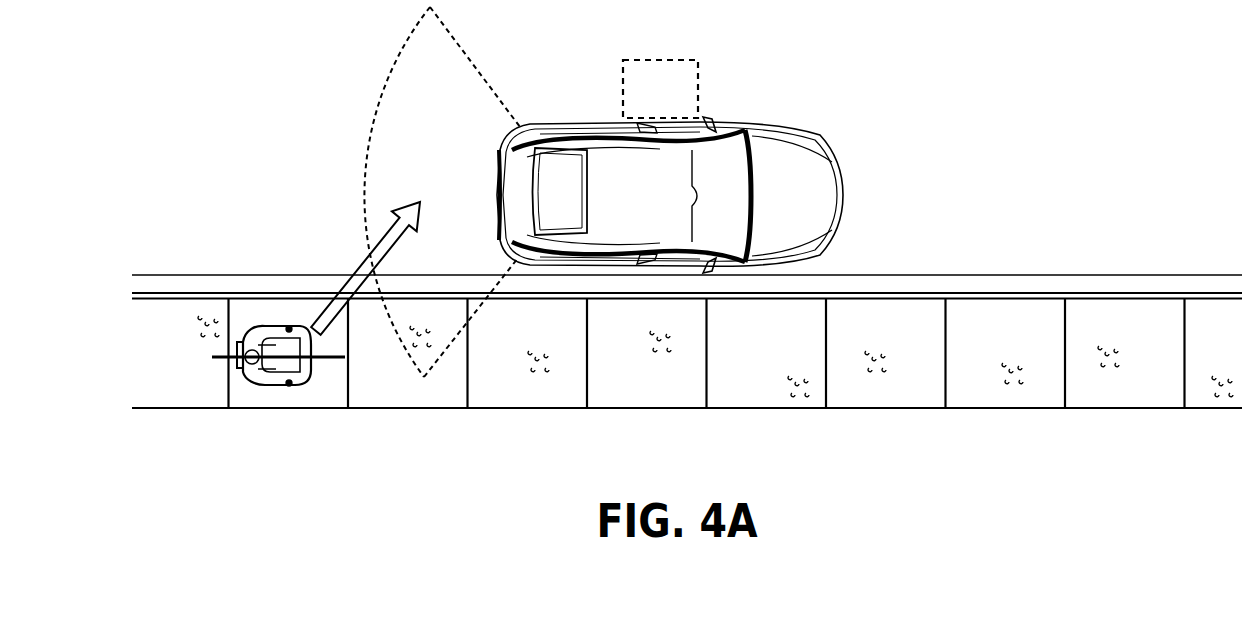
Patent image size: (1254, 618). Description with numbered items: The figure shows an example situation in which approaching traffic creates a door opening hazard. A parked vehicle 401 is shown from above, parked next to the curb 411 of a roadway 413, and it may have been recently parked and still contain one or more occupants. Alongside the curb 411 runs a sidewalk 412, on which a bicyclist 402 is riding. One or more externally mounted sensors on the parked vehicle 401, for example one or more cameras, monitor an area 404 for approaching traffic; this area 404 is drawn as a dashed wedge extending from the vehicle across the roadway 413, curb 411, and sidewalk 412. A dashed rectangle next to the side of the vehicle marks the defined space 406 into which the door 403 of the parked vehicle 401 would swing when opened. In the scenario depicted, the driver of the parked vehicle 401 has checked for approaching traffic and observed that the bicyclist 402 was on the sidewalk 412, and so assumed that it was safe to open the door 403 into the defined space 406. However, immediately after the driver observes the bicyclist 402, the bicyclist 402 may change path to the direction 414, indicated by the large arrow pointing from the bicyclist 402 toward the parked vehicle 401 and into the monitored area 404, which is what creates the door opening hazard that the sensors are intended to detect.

The parked vehicle 401 is at (845, 182).
The bicyclist 402 is at (263, 387).
The door 403 is at (710, 120).
The area 404 is at (396, 60).
The defined space 406 is at (699, 72).
The curb 411 is at (177, 278).
The sidewalk 412 is at (1126, 323).
The roadway 413 is at (1126, 136).
The direction 414 is at (372, 252).